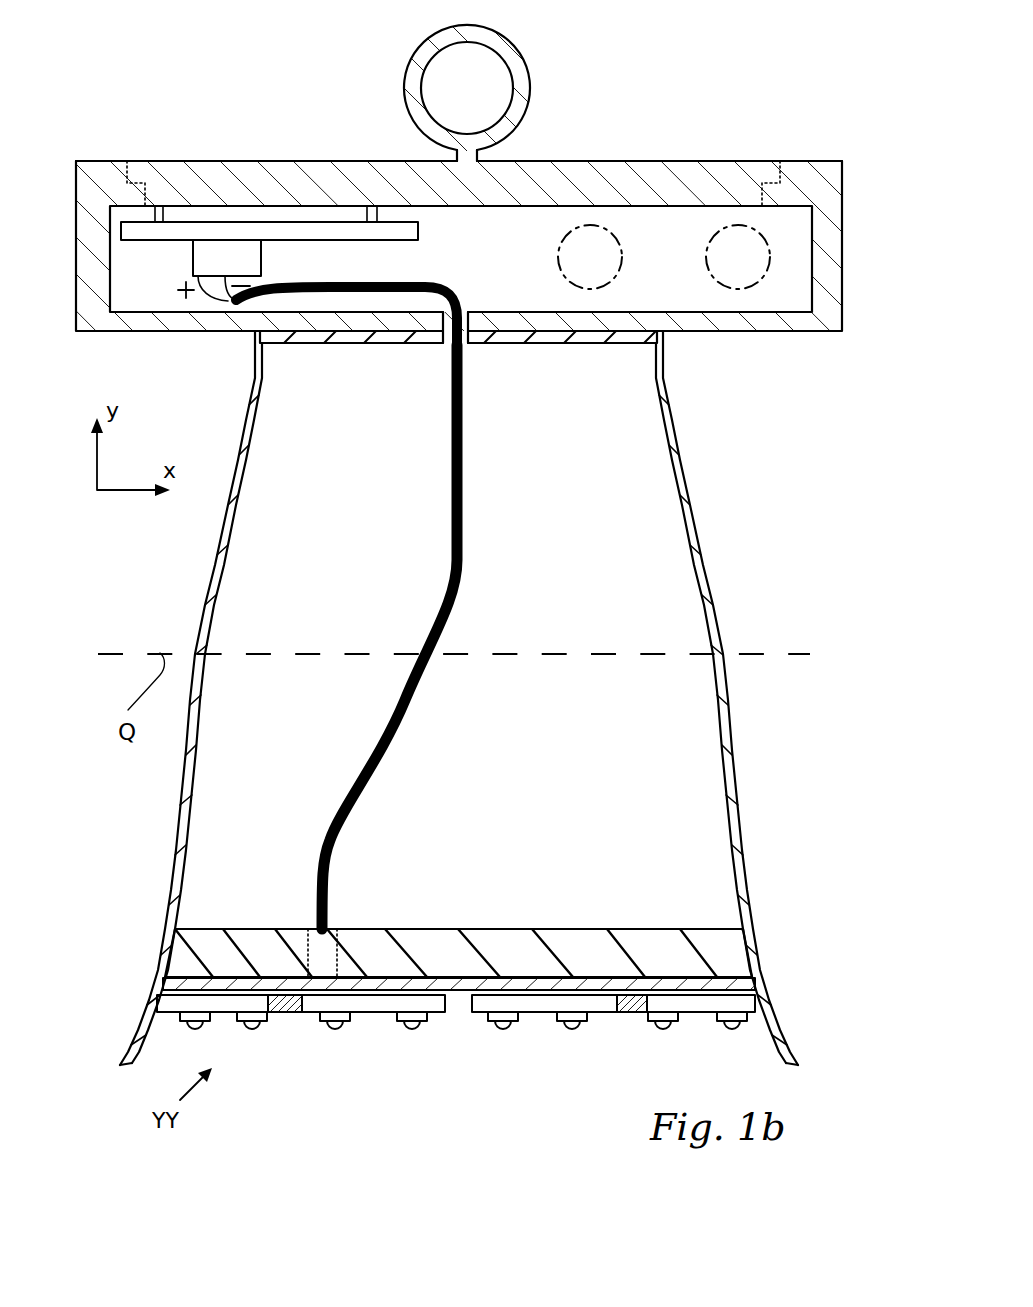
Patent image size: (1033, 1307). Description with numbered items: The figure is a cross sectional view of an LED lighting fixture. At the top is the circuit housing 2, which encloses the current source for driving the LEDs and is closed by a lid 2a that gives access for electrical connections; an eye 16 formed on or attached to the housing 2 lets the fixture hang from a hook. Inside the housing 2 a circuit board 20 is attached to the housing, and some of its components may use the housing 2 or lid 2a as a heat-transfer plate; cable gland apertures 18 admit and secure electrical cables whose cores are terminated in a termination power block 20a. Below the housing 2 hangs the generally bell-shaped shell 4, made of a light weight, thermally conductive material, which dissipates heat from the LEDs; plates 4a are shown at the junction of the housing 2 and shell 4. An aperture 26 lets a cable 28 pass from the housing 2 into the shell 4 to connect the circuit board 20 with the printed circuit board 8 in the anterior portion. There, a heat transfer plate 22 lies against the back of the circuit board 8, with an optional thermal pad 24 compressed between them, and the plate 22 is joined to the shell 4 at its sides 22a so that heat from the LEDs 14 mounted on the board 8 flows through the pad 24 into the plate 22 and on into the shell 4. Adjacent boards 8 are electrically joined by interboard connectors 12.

The circuit housing 2 is at (706, 331).
The lid 2a is at (292, 183).
The shell 4 is at (217, 603).
The support plate 4a is at (337, 347).
The circuit board 8 is at (358, 1005).
The interboard connector 12 is at (298, 1003).
The LED 14 is at (193, 1029).
The eye 16 is at (530, 82).
The cable gland aperture 18 is at (717, 283).
The circuit board 20 is at (418, 231).
The termination power block 20a is at (219, 270).
The heat transfer plate 22 is at (435, 948).
The side of heat transfer plate 22a is at (168, 955).
The thermal pad 24 is at (583, 985).
The aperture 26 is at (470, 312).
The cable 28 is at (462, 590).